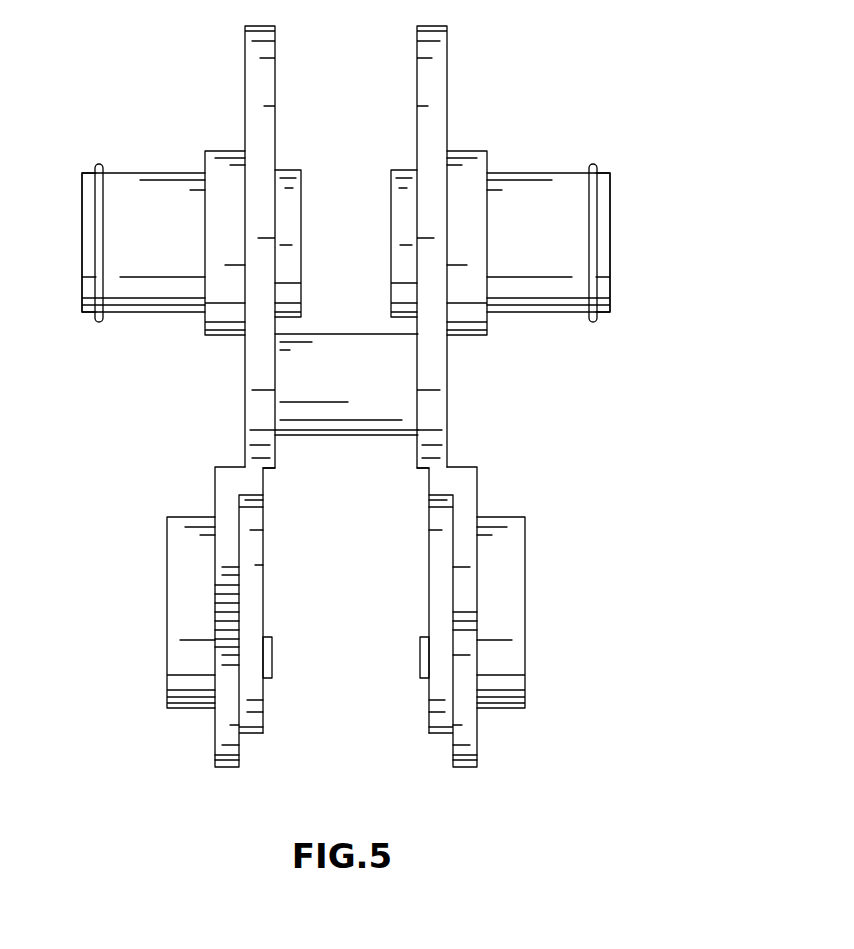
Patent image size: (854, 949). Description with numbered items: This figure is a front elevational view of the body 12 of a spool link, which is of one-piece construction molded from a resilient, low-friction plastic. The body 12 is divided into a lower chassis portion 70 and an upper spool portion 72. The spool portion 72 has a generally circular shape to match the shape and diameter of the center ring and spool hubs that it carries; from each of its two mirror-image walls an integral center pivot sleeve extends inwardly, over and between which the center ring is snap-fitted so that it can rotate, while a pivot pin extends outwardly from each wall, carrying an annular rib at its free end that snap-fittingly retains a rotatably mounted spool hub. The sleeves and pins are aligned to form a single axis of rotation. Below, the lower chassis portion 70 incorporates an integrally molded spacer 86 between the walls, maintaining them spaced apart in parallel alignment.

The body 12 is at (375, 396).
The lower chassis portion 70 is at (557, 643).
The upper spool portion 72 is at (375, 379).
The spacer 86 is at (330, 412).